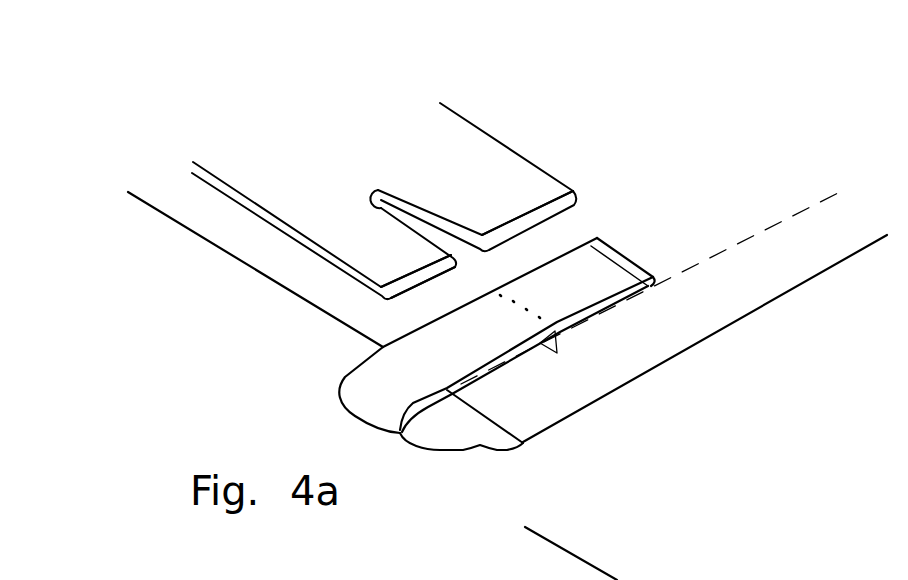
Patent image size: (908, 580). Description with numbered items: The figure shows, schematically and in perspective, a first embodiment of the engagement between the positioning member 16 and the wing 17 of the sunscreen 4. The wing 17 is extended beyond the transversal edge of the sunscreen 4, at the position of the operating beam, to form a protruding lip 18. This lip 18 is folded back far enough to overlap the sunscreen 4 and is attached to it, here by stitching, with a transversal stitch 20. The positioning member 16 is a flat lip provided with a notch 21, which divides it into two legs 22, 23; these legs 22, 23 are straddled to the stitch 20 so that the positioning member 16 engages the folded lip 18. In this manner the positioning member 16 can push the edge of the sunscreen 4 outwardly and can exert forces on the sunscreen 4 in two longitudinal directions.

The sunscreen 4 is at (753, 138).
The positioning member 16 is at (348, 236).
The wing 17 is at (727, 293).
The protruding lip 18 is at (586, 281).
The transversal stitch 20 is at (557, 337).
The notch 21 is at (432, 208).
The leg 22 is at (388, 267).
The leg 23 is at (519, 176).